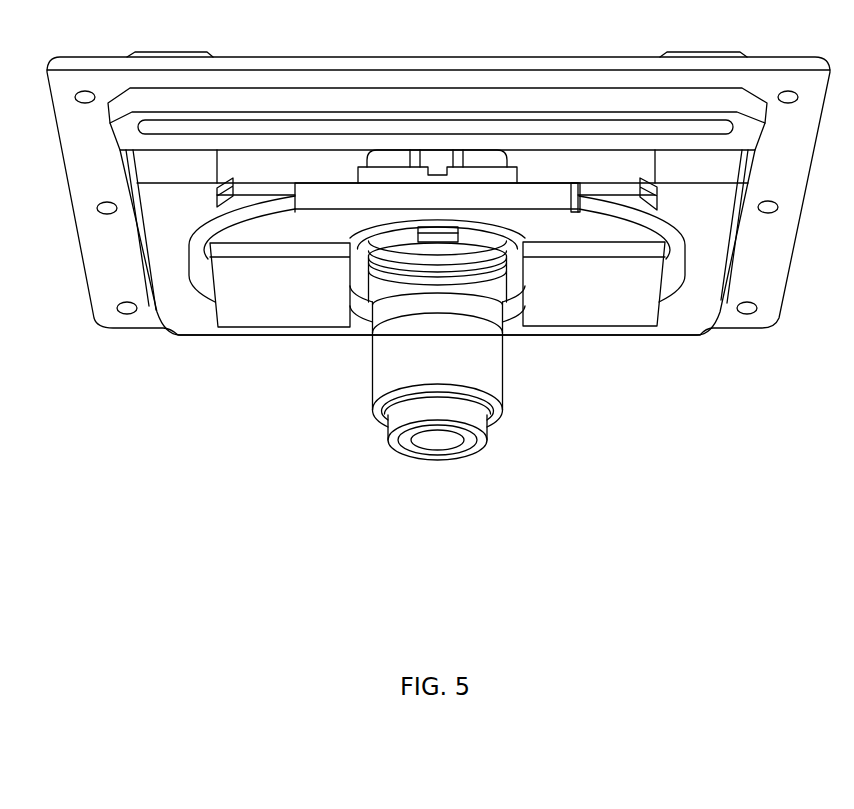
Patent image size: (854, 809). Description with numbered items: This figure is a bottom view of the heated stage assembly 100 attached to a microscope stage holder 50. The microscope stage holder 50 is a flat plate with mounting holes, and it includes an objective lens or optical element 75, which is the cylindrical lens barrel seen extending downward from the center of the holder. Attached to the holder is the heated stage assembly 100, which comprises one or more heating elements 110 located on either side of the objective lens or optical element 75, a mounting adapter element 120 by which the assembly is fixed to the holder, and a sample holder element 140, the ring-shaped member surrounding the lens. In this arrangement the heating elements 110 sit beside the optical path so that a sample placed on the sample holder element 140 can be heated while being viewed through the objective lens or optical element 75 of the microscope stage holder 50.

The microscope stage holder 50 is at (100, 195).
The objective lens or optical element 75 is at (432, 441).
The heated stage assembly 100 is at (286, 228).
The heating element 110 is at (288, 297).
The mounting adapter element 120 is at (620, 196).
The sample holder element 140 is at (583, 232).